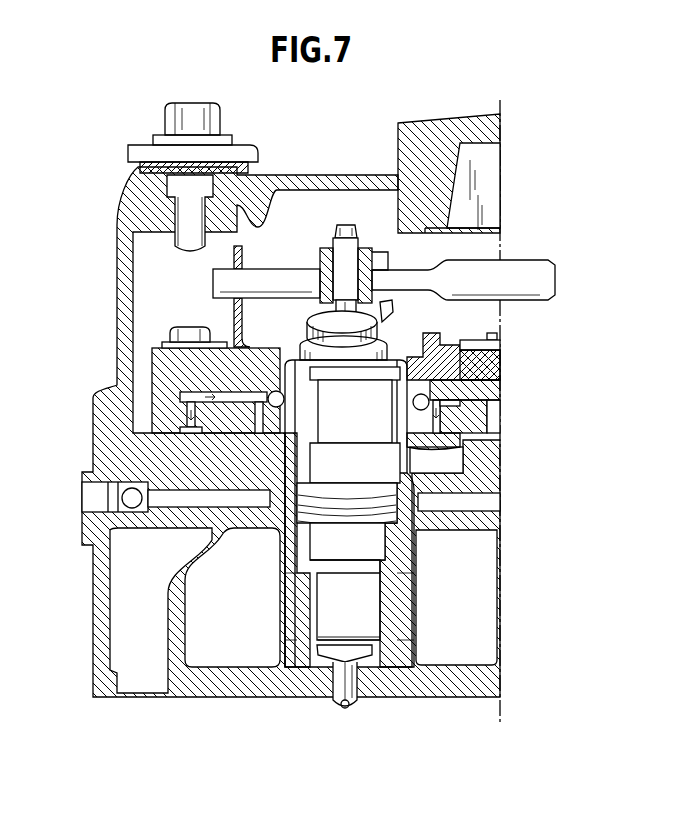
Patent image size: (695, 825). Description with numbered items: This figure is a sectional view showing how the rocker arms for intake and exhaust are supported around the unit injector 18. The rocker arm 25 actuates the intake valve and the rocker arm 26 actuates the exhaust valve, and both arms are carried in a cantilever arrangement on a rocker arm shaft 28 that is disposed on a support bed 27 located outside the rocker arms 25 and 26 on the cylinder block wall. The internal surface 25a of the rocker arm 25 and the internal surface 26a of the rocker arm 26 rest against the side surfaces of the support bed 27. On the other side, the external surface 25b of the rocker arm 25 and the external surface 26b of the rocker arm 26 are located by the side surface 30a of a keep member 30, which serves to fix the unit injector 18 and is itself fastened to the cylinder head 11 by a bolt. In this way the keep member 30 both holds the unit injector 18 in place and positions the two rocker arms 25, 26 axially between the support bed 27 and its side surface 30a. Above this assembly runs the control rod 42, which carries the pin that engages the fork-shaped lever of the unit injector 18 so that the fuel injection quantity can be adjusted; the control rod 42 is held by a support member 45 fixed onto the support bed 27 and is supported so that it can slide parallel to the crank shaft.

The cylinder head 11 is at (150, 458).
The unit injector 18 is at (353, 388).
The rocker arm 25 is at (267, 340).
The internal surface of the rocker arm 25a is at (182, 349).
The external surface of the rocker arm 25b is at (297, 336).
The rocker arm 26 is at (437, 343).
The internal surface of the rocker arm 26a is at (430, 370).
The external surface of the rocker arm 26b is at (450, 385).
The support bed 27 is at (172, 372).
The rocker arm shaft 28 is at (215, 333).
The keep member 30 is at (297, 372).
The side surface of the keep member 30a is at (312, 440).
The control rod 42 is at (515, 272).
The support member 45 is at (234, 261).